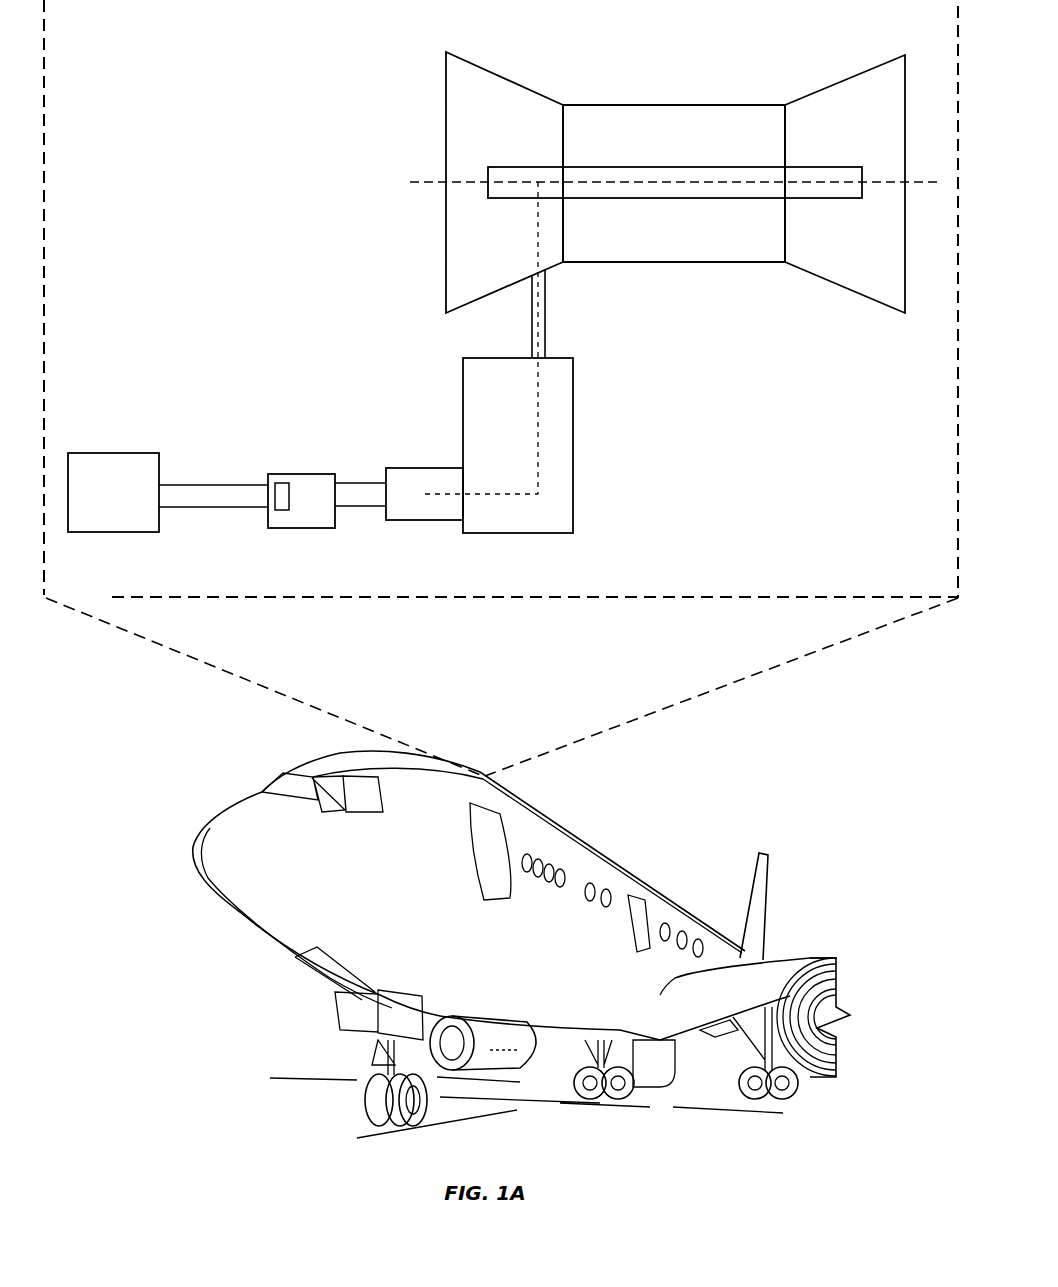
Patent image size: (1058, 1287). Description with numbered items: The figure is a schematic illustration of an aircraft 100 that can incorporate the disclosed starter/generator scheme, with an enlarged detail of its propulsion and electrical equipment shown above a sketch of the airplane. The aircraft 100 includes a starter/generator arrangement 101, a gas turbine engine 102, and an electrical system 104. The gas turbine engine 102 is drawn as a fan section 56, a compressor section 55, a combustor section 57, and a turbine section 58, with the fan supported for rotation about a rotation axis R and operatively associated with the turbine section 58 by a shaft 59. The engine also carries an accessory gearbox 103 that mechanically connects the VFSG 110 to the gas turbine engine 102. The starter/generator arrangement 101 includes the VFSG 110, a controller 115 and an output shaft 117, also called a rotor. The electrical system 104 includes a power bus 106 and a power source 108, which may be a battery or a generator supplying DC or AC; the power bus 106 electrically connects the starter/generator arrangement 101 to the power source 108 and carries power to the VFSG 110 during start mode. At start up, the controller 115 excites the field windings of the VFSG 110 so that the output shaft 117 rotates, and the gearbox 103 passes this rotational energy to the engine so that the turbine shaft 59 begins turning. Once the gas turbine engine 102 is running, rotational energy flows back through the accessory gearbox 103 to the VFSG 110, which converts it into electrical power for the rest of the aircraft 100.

The aircraft 100 is at (183, 790).
The starter/generator arrangement 101 is at (311, 412).
The gas turbine engine 102 is at (657, 576).
The accessory gearbox 103 is at (427, 522).
The electrical system 104 is at (103, 486).
The power bus 106 is at (195, 495).
The power source 108 is at (110, 537).
The VFSG 110 is at (289, 506).
The controller 115 is at (282, 512).
The output shaft 117 is at (348, 507).
The compressor section 55 is at (595, 135).
The fan section 56 is at (508, 98).
The combustor section 57 is at (712, 120).
The turbine section 58 is at (878, 85).
The shaft 59 is at (870, 177).
The rotation axis R is at (425, 180).